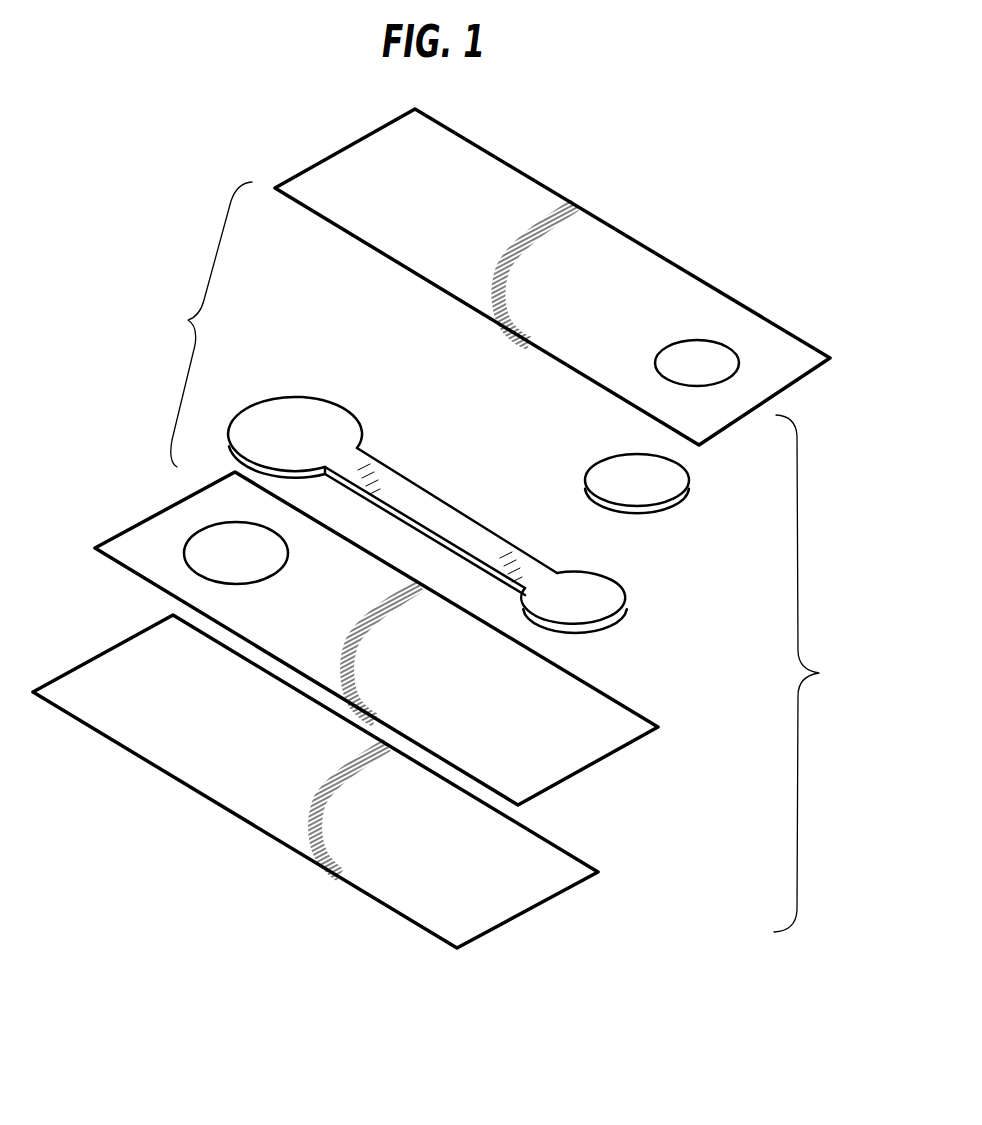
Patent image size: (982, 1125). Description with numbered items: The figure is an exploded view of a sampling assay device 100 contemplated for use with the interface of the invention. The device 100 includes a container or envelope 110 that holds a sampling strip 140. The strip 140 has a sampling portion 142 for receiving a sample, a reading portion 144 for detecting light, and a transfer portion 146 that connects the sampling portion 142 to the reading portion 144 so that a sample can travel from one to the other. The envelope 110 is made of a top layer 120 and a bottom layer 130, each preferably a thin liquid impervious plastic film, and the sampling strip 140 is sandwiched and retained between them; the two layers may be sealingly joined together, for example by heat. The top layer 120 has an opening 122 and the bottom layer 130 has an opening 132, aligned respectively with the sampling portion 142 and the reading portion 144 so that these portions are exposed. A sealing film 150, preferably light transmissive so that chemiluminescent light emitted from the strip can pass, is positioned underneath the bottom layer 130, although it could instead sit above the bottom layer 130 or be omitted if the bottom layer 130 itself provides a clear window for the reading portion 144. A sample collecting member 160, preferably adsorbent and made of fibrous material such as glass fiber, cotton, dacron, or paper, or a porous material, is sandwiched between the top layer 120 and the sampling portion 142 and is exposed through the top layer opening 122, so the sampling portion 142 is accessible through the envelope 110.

The sampling assay device 100 is at (821, 673).
The container or envelope 110 is at (195, 324).
The top layer 120 is at (449, 221).
The top layer opening 122 is at (707, 362).
The bottom layer 130 is at (437, 683).
The bottom layer opening 132 is at (210, 548).
The sampling strip 140 is at (466, 473).
The sampling portion 142 is at (583, 600).
The reading portion 144 is at (302, 422).
The transfer portion 146 is at (447, 520).
The sealing film 150 is at (289, 766).
The sample collecting member 160 is at (659, 495).